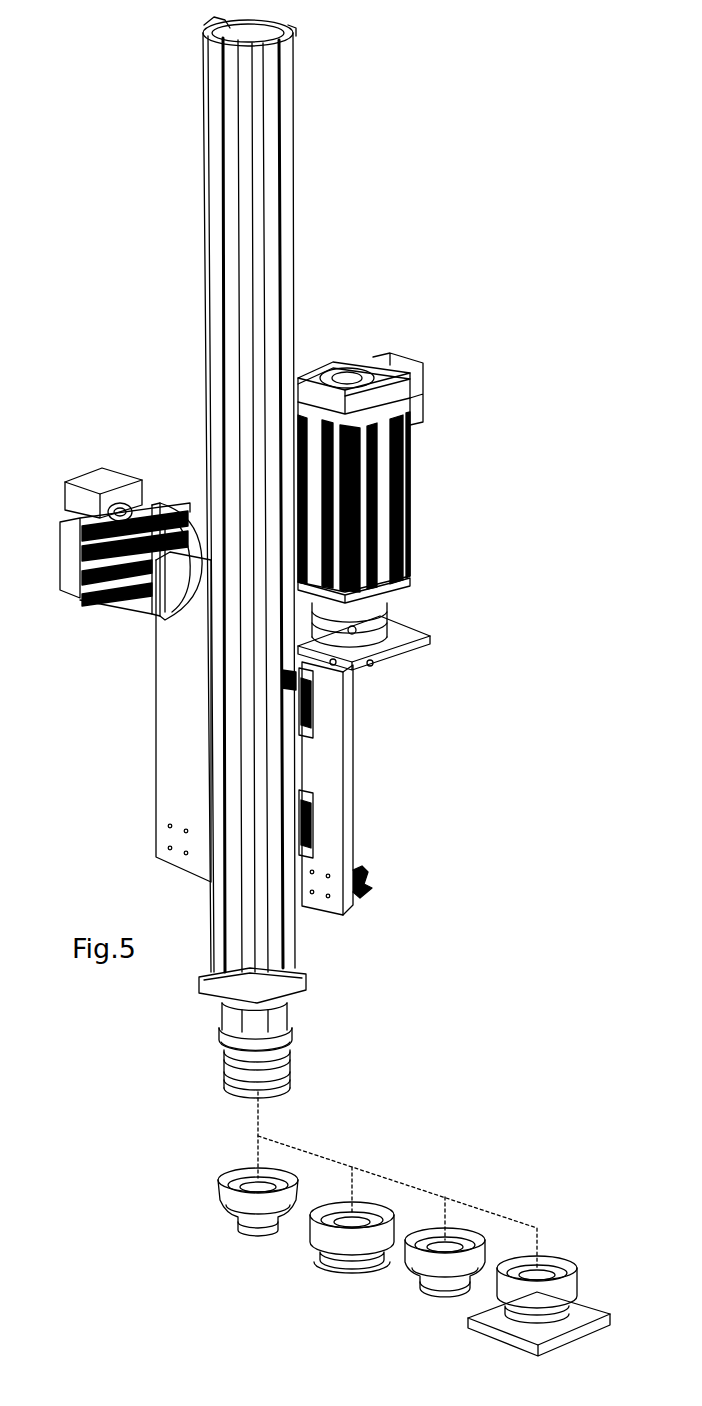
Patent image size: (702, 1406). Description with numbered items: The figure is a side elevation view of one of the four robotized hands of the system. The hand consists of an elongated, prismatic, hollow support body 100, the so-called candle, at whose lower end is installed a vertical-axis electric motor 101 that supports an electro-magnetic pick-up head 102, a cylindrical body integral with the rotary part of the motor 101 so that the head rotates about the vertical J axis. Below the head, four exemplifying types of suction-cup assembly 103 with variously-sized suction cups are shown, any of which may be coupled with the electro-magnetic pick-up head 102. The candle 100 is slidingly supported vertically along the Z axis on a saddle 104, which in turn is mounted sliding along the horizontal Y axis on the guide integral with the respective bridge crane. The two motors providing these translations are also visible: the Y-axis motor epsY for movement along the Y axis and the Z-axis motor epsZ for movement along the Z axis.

The support body 100 is at (298, 936).
The vertical-axis motor 101 is at (300, 1010).
The pick-up head 102 is at (298, 1077).
The suction-cup assembly 103 is at (212, 1222).
The saddle 104 is at (348, 802).
The Y-axis motor epsY is at (420, 490).
The Z-axis motor epsZ is at (97, 605).